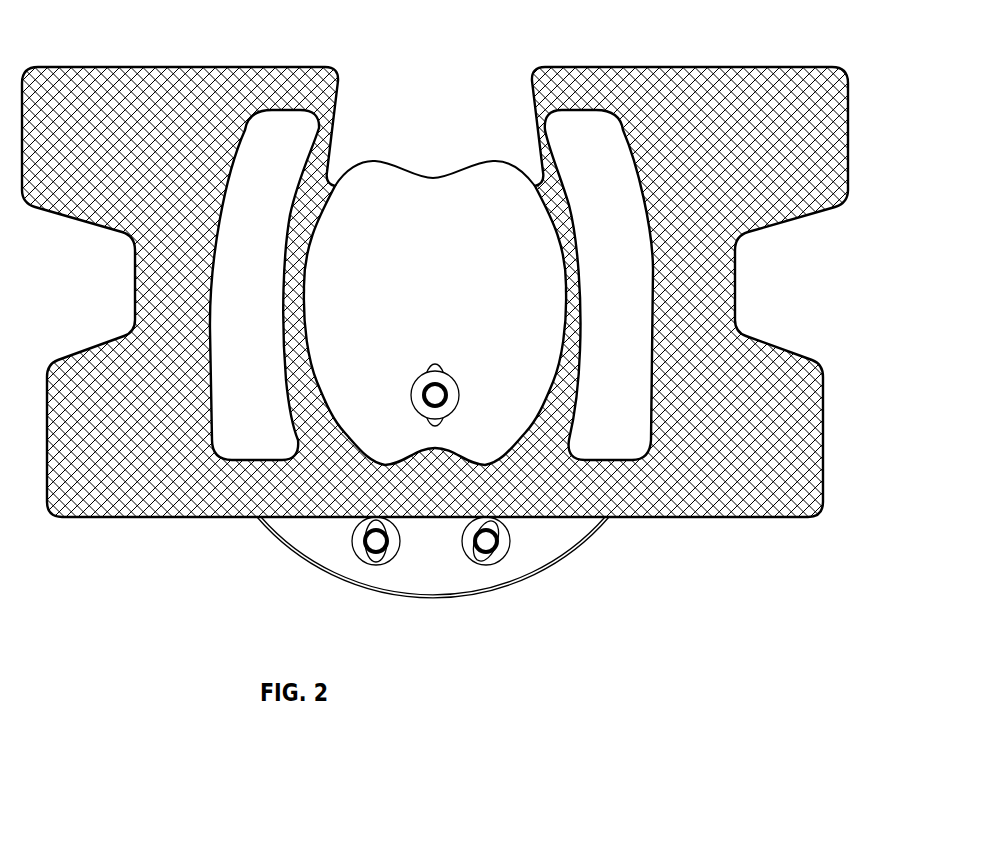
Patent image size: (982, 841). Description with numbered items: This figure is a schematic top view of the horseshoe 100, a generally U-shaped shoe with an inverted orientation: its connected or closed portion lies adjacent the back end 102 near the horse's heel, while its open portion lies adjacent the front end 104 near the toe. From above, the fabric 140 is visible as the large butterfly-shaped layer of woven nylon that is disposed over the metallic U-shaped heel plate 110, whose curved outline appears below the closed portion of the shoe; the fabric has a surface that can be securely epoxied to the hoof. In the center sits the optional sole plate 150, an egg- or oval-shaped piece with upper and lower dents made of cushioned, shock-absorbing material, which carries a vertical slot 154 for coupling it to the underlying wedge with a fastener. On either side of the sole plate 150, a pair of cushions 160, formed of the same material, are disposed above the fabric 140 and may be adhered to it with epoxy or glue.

The horseshoe 100 is at (649, 591).
The back end 102 is at (494, 621).
The front end 104 is at (447, 123).
The heel plate 110 is at (348, 568).
The fabric 140 is at (162, 93).
The sole plate 150 is at (435, 193).
The vertical slot 154 is at (445, 358).
The cushions 160 is at (227, 308).